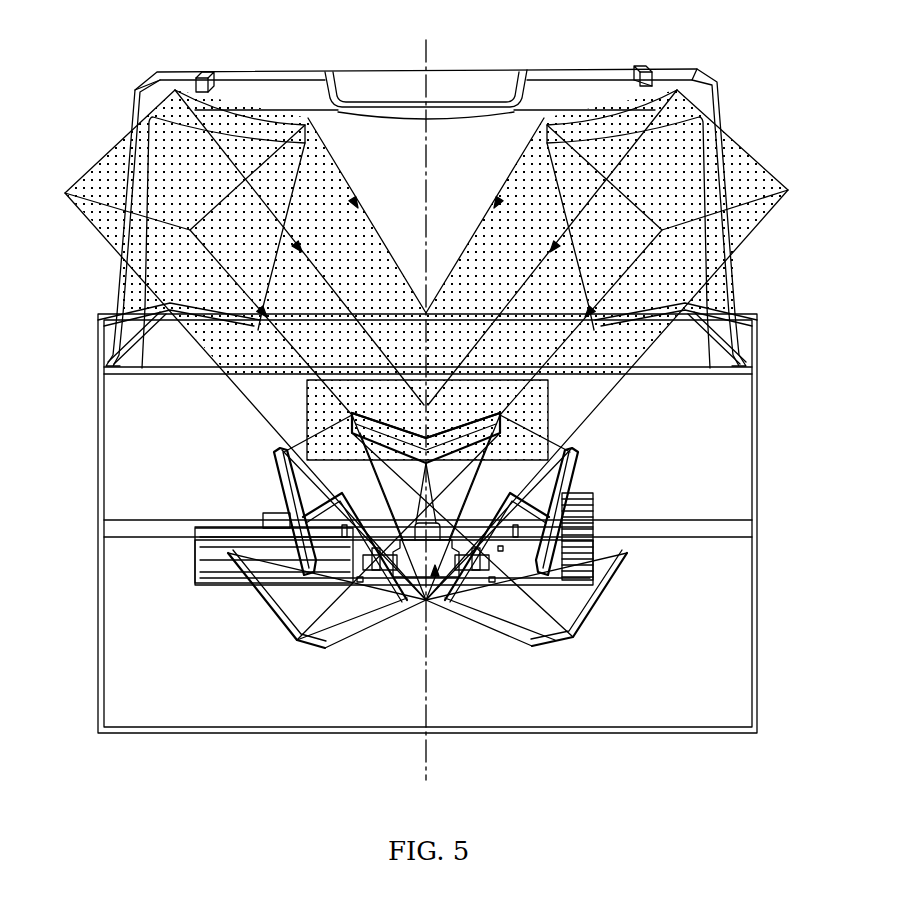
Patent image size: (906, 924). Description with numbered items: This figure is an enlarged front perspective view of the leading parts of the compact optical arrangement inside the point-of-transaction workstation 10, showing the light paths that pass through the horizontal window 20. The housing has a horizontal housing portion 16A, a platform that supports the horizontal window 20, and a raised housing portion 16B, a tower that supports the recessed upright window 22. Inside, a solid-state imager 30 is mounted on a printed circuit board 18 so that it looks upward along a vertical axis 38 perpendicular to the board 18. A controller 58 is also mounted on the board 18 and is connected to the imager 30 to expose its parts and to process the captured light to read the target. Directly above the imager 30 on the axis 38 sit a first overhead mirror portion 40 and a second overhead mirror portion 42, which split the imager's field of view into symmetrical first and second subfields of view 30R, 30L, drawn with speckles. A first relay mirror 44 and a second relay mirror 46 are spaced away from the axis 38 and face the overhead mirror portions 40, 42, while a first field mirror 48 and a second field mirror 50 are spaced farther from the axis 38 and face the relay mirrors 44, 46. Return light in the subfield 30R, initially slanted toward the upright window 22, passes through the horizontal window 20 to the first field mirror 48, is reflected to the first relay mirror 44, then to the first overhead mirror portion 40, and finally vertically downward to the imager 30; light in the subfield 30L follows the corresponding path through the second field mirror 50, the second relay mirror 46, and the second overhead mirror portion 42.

The point-of-transaction workstation 10 is at (100, 52).
The horizontal housing portion 16A is at (106, 487).
The raised housing portion 16B is at (137, 107).
The printed circuit board 18 is at (208, 586).
The horizontal window 20 is at (310, 446).
The upright window 22 is at (413, 191).
The solid-state imager 30 is at (436, 586).
The second subfield of view 30L is at (283, 472).
The first subfield of view 30R is at (556, 470).
The vertical axis 38 is at (430, 765).
The first overhead mirror portion 40 is at (508, 424).
The second overhead mirror portion 42 is at (350, 418).
The first relay mirror 44 is at (594, 507).
The second relay mirror 46 is at (293, 497).
The first field mirror 48 is at (274, 633).
The second field mirror 50 is at (610, 587).
The controller 58 is at (203, 560).